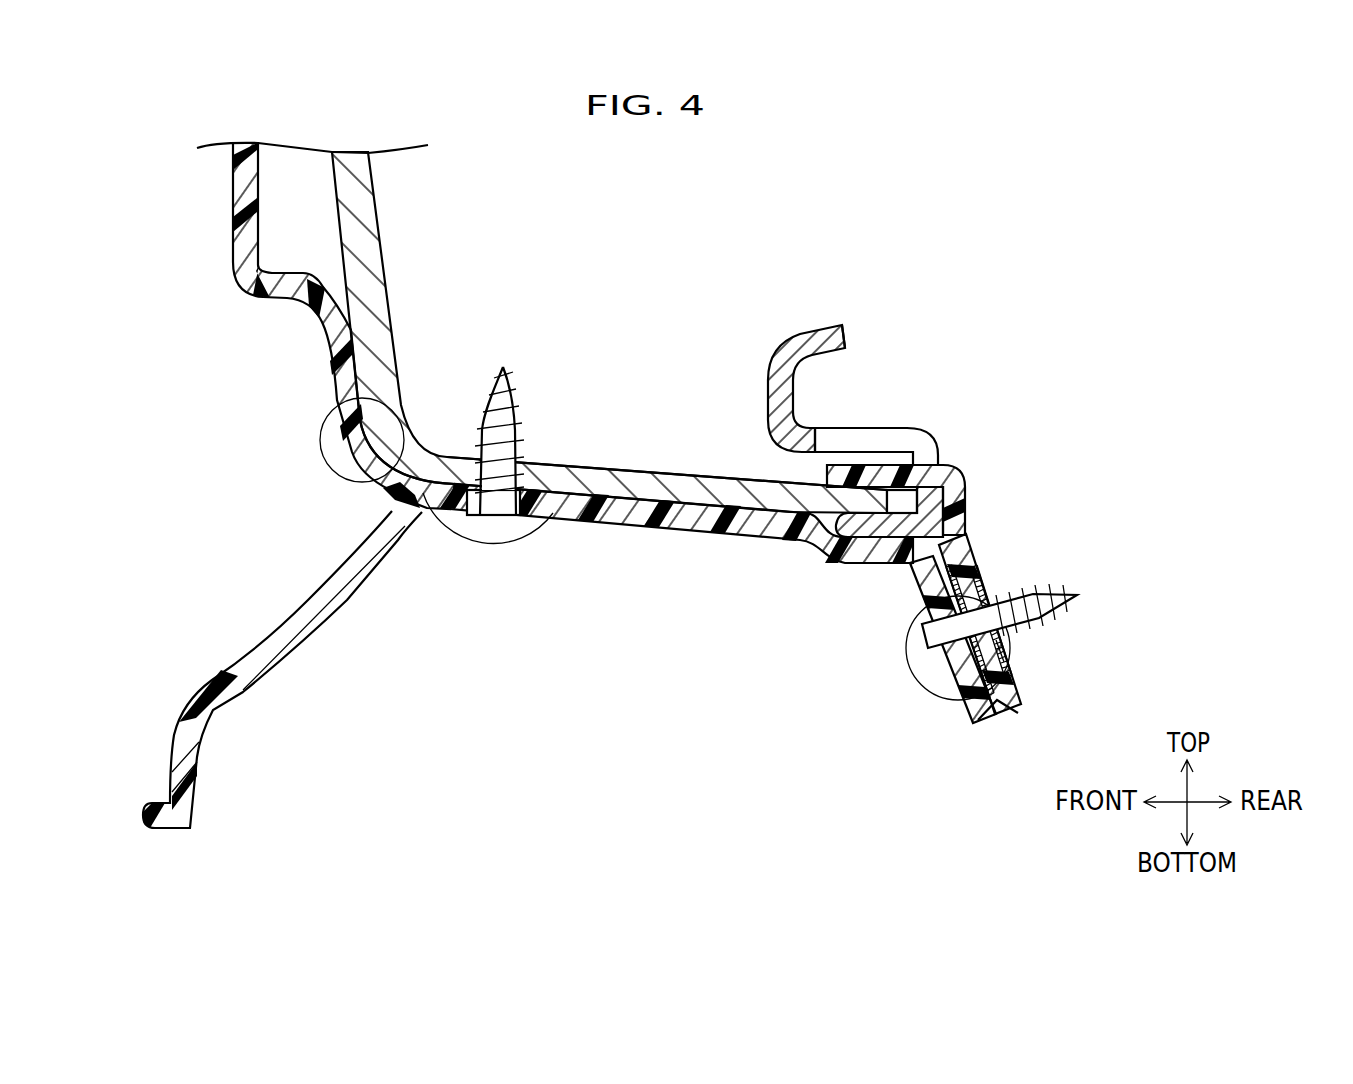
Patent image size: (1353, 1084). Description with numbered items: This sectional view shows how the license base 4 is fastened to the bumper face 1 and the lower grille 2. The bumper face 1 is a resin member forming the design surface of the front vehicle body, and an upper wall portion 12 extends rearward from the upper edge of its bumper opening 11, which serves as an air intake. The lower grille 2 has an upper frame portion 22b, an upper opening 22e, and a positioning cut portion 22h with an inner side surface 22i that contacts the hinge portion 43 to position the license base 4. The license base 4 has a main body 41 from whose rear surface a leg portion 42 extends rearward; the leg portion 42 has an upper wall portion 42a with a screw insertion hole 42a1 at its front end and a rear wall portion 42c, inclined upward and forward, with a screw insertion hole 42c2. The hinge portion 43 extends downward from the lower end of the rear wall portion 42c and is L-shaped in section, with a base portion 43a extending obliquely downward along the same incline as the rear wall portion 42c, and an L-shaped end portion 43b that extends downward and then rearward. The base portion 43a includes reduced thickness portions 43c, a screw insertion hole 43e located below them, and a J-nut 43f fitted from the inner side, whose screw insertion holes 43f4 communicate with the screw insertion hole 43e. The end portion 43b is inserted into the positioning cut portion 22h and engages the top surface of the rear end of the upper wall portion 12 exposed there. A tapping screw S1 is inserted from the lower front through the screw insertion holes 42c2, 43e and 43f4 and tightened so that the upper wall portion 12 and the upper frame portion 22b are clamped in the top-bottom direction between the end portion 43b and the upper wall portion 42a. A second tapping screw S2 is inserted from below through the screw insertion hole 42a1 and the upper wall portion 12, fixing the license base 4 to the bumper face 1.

The bumper face 1 is at (370, 210).
The bumper opening 11 is at (352, 392).
The upper wall portion 12 is at (598, 475).
The lower grille 2 is at (828, 325).
The upper frame portion 22b is at (810, 385).
The positioning cut portion 22h is at (818, 440).
The side surface 22i is at (910, 440).
The upper opening 22e is at (838, 567).
The license base 4 is at (222, 198).
The main body 41 is at (327, 337).
The leg portion 42 is at (716, 627).
The upper wall portion 42a is at (609, 525).
The screw insertion hole 42a1 is at (500, 503).
The rear wall portion 42c is at (920, 612).
The screw insertion hole 42c2 is at (945, 680).
The hinge portion 43 is at (979, 617).
The base portion 43a is at (1020, 688).
The end portion 43b is at (912, 452).
The reduced thickness portion 43c is at (1000, 722).
The screw insertion hole 43e is at (1002, 648).
The J-nut 43f is at (975, 572).
The screw insertion hole 43f4 is at (992, 600).
The tapping screw S1 is at (1078, 607).
The tapping screw S2 is at (497, 378).